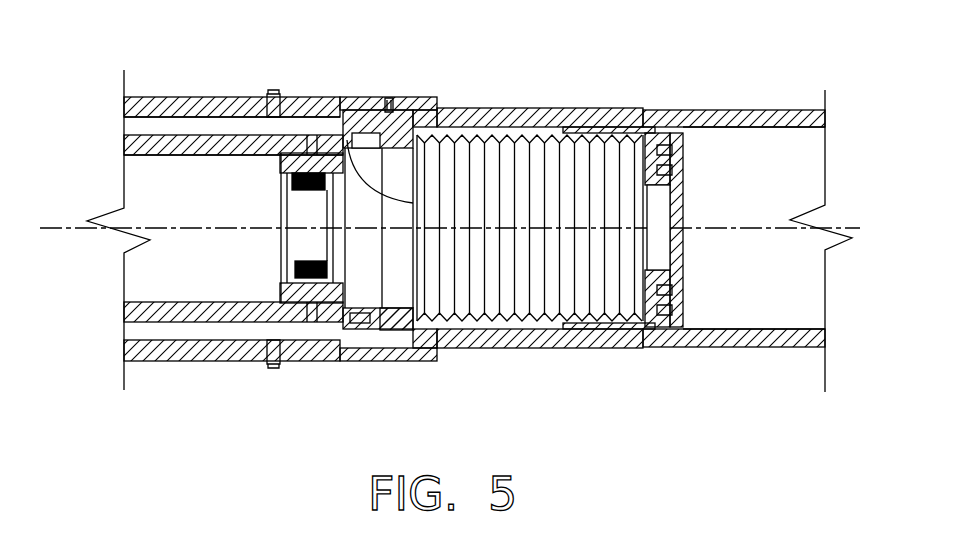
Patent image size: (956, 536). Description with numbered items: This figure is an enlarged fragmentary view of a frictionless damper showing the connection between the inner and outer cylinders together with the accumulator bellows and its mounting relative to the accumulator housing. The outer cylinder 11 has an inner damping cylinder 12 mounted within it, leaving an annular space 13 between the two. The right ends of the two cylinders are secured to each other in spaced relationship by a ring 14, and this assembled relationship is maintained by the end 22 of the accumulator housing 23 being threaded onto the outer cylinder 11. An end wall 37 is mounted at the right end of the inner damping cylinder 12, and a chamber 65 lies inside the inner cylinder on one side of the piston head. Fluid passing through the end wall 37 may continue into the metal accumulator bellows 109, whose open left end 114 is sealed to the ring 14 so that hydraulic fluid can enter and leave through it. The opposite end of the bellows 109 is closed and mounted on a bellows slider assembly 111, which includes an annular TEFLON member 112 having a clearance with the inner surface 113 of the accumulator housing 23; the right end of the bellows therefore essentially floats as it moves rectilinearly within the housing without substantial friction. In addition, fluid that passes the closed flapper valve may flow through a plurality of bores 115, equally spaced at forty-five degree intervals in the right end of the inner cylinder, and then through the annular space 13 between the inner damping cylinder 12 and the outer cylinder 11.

The outer cylinder 11 is at (170, 97).
The inner damping cylinder 12 is at (182, 157).
The annular space 13 is at (133, 127).
The ring 14 is at (403, 307).
The end of accumulator housing 22 is at (353, 137).
The accumulator housing 23 is at (646, 110).
The end wall 37 is at (342, 275).
The chamber 65 is at (133, 190).
The metal accumulator bellows 109 is at (497, 150).
The bellows slider assembly 111 is at (685, 223).
The annular TEFLON member 112 is at (637, 329).
The inner surface of accumulator housing 113 is at (720, 127).
The open left end of metal accumulator bellows 114 is at (345, 137).
The bores 115 is at (362, 137).